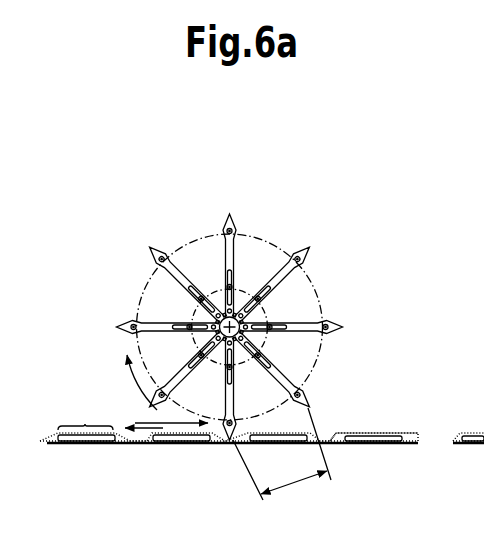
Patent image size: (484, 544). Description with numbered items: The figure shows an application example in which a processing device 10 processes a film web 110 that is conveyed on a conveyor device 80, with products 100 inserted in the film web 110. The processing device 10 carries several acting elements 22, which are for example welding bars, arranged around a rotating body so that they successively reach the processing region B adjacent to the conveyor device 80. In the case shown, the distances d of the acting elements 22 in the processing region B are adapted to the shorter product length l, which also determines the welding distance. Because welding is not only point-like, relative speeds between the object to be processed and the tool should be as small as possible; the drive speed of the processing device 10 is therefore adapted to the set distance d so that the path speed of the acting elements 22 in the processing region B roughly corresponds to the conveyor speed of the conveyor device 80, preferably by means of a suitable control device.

The processing device 10 is at (184, 303).
The acting elements 22 is at (237, 222).
The conveyor device 80 is at (392, 445).
The products 100 is at (362, 441).
The film web 110 is at (334, 434).
The processing region B is at (190, 424).
The product length l is at (85, 424).
The distance d is at (282, 454).